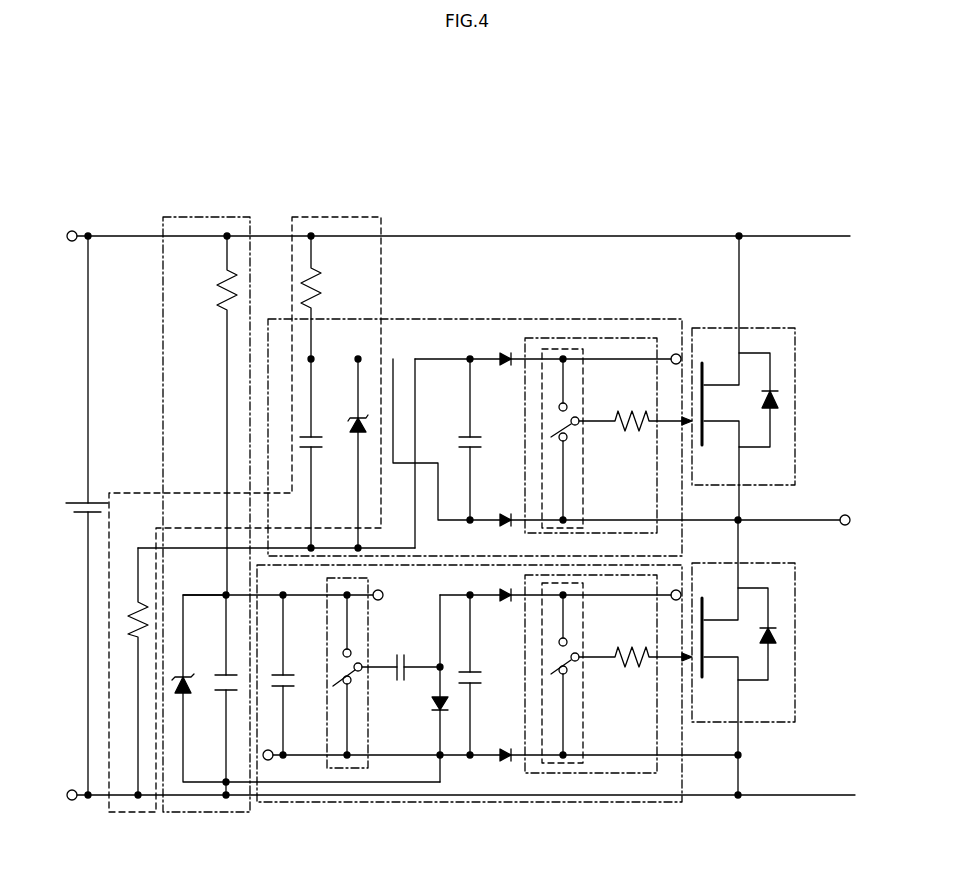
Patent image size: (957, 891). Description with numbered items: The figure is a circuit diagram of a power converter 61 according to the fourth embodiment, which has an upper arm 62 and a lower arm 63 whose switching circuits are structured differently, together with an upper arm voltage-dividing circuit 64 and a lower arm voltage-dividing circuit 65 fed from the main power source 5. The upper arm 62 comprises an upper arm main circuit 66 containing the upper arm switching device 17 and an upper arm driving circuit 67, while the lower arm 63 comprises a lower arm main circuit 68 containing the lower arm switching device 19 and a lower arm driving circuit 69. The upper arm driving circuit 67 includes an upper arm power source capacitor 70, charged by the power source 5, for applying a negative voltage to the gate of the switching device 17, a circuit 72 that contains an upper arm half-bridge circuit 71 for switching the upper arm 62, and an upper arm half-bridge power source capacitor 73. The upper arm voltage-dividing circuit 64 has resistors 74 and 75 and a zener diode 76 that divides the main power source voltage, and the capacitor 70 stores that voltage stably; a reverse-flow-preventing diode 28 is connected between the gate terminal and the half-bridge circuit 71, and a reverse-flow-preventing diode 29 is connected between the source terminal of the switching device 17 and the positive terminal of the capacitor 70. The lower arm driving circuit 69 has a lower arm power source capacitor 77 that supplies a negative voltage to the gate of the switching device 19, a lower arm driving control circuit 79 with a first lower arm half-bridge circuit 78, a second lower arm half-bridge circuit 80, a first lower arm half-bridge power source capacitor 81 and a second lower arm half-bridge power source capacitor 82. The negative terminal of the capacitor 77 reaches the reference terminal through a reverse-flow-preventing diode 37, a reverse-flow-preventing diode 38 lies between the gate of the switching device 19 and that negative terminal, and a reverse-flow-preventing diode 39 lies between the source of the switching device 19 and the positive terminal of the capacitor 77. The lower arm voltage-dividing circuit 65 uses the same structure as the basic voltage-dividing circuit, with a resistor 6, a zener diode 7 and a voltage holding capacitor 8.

The main power source 5 is at (84, 500).
The resistor 6 is at (217, 300).
The zener diode 7 is at (186, 696).
The voltage holding capacitor 8 is at (221, 674).
The upper arm switching device 17 is at (708, 384).
The lower arm switching device 19 is at (712, 660).
The reverse-flow-preventing diode 28 is at (513, 356).
The reverse-flow-preventing diode 29 is at (508, 516).
The reverse-flow-preventing diode 37 is at (437, 706).
The reverse-flow-preventing diode 38 is at (508, 592).
The reverse-flow-preventing diode 39 is at (508, 752).
The power converter 61 is at (566, 183).
The upper arm 62 is at (806, 428).
The lower arm 63 is at (806, 652).
The upper arm voltage-dividing circuit 64 is at (337, 217).
The lower arm voltage-dividing circuit 65 is at (206, 217).
The upper arm main circuit 66 is at (795, 362).
The upper arm driving circuit 67 is at (456, 319).
The lower arm main circuit 68 is at (796, 598).
The lower arm driving circuit 69 is at (445, 802).
The upper arm power source capacitor 70 is at (318, 436).
The upper arm half-bridge circuit 71 is at (566, 349).
The circuit 72 is at (624, 338).
The upper arm half-bridge power source capacitor 73 is at (478, 438).
The resistor 74 is at (321, 292).
The resistor 75 is at (132, 616).
The zener diode 76 is at (355, 428).
The lower arm power source capacitor 77 is at (400, 660).
The first lower arm half-bridge circuit 78 is at (550, 763).
The lower arm driving control circuit 79 is at (630, 773).
The second lower arm half-bridge circuit 80 is at (344, 768).
The first lower arm half-bridge power source capacitor 81 is at (478, 698).
The second lower arm half-bridge power source capacitor 82 is at (290, 674).